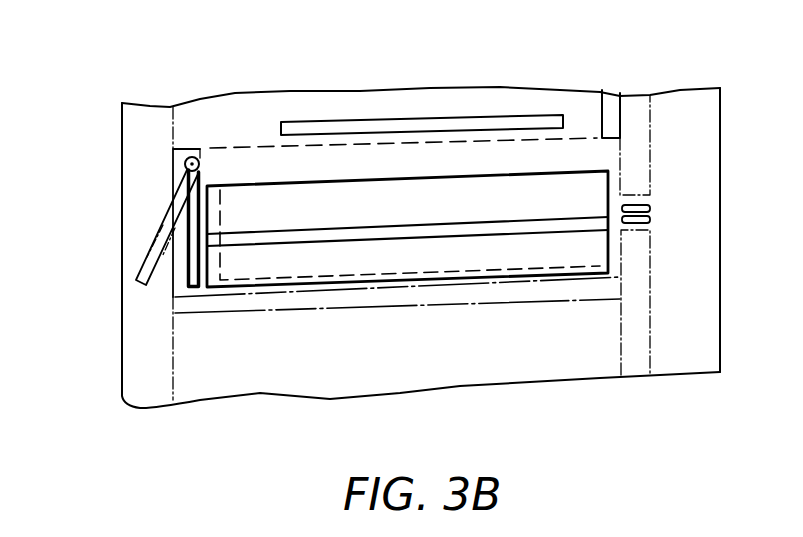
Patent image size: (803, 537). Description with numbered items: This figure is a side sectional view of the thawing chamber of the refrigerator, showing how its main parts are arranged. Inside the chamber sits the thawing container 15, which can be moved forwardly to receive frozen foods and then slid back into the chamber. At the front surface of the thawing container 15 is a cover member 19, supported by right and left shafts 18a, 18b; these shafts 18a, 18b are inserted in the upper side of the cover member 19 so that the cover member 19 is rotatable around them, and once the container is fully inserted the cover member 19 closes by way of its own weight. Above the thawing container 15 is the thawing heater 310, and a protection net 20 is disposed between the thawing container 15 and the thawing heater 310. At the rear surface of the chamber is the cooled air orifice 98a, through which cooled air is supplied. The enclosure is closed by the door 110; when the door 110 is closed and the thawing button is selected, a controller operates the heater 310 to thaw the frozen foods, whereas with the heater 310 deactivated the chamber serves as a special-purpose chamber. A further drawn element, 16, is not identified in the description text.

The door 110 is at (142, 204).
The cover member 19 is at (195, 257).
The right shaft 18a is at (197, 156).
The left shaft 18b is at (167, 227).
The thawing heater 310 is at (508, 114).
The protection net 20 is at (602, 90).
The cooled air orifice 98a is at (651, 205).
The thawing container 15 is at (254, 262).
The developing unit 16 is at (375, 231).